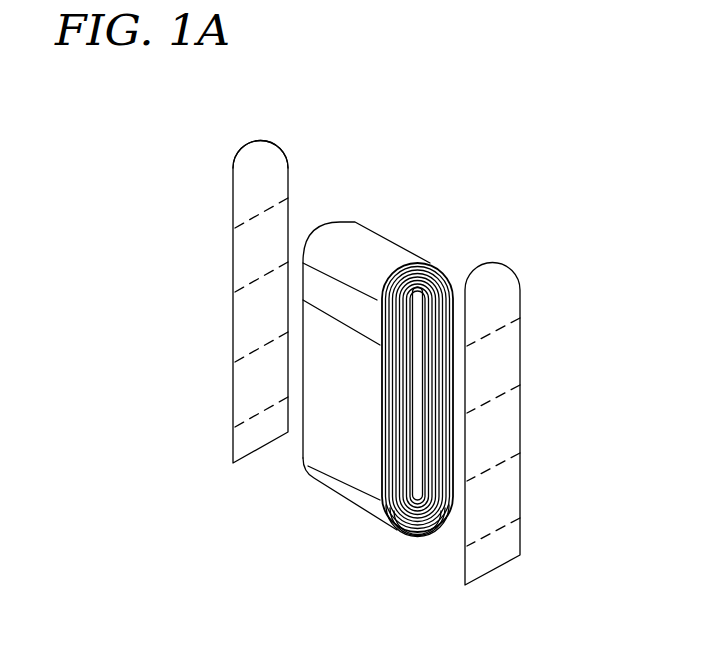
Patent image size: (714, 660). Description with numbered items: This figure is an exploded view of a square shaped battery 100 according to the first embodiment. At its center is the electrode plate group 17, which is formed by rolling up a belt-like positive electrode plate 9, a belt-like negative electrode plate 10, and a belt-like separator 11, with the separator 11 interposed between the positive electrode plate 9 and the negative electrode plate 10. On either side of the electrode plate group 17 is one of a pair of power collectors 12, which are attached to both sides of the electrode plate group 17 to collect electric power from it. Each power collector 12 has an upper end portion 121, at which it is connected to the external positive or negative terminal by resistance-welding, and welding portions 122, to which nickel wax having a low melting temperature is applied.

The square shaped battery 100 is at (512, 58).
The electrode plate group 17 is at (368, 186).
The separator 11 is at (437, 265).
The negative electrode plate 10 is at (394, 263).
The positive electrode plate 9 is at (430, 535).
The power collector 12 is at (263, 117).
The upper end portion 121 is at (236, 157).
The welding portion 122 is at (258, 408).